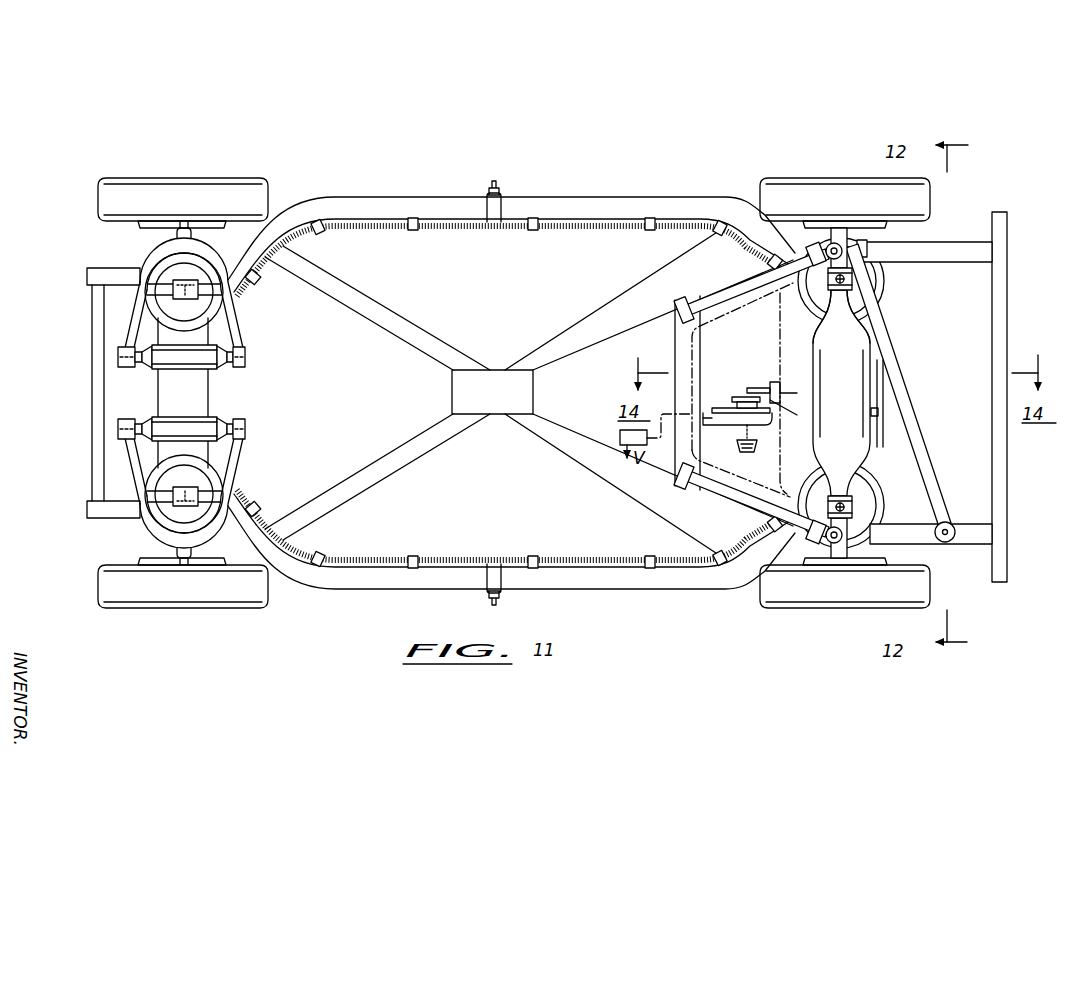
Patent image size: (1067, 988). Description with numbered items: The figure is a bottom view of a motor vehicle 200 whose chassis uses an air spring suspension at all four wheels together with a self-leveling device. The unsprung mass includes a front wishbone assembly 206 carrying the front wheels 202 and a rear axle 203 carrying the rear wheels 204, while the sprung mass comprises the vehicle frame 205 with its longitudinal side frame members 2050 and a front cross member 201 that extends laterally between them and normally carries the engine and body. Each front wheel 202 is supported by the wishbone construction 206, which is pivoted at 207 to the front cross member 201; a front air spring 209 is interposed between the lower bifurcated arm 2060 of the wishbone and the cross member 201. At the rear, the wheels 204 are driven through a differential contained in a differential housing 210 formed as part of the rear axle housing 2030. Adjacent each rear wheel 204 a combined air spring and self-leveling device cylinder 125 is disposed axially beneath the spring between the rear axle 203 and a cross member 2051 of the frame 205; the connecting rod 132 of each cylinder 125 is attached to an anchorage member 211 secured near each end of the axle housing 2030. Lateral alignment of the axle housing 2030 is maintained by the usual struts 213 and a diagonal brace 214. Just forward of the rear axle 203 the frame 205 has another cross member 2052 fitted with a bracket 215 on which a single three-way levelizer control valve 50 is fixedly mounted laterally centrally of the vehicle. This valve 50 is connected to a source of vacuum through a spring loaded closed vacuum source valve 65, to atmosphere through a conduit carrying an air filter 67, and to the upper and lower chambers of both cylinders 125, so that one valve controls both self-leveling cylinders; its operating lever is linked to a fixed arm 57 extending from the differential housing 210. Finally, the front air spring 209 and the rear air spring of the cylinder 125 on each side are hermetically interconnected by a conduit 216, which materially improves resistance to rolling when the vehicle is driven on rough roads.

The vehicle 200 is at (90, 375).
The front cross member 201 is at (204, 389).
The front wheels 202 is at (164, 180).
The rear axle 203 is at (864, 460).
The rear wheels 204 is at (800, 192).
The vehicle frame 205 is at (634, 206).
The front wishbone assembly 206 is at (246, 313).
The pivot 207 is at (247, 358).
The front air springs 209 is at (177, 273).
The differential housing 210 is at (873, 375).
The anchorage member 211 is at (855, 282).
The struts 213 is at (762, 291).
The diagonal brace 214 is at (903, 390).
The bracket 215 is at (712, 423).
The conduit 216 is at (432, 222).
The combined air spring and self-leveling device cylinder 125 is at (893, 279).
The connecting rod 132 is at (878, 255).
The rear axle housing 2030 is at (848, 333).
The side frame members 2050 is at (391, 212).
The cross member 2051 is at (880, 430).
The cross member 2052 is at (677, 352).
The lower bifurcated arm 2060 is at (135, 313).
The three-way levelizer control valve 50 is at (718, 408).
The fixed arm 57 is at (775, 382).
The vacuum source valve 65 is at (618, 433).
The air filter 67 is at (757, 448).